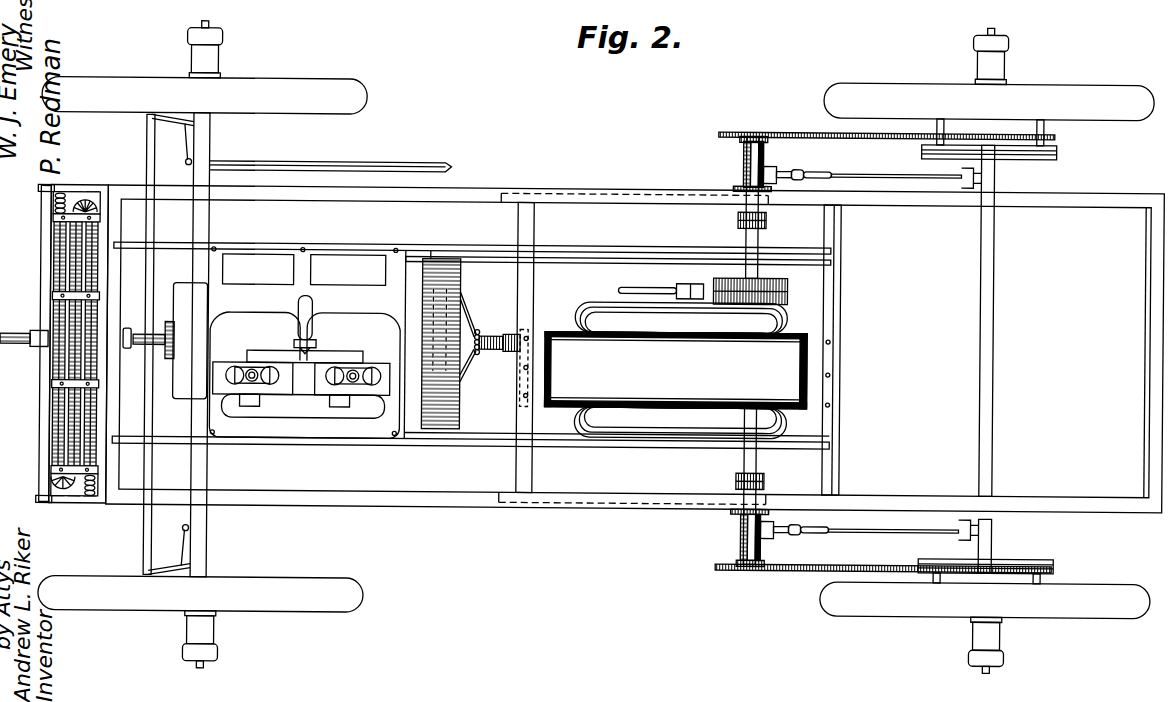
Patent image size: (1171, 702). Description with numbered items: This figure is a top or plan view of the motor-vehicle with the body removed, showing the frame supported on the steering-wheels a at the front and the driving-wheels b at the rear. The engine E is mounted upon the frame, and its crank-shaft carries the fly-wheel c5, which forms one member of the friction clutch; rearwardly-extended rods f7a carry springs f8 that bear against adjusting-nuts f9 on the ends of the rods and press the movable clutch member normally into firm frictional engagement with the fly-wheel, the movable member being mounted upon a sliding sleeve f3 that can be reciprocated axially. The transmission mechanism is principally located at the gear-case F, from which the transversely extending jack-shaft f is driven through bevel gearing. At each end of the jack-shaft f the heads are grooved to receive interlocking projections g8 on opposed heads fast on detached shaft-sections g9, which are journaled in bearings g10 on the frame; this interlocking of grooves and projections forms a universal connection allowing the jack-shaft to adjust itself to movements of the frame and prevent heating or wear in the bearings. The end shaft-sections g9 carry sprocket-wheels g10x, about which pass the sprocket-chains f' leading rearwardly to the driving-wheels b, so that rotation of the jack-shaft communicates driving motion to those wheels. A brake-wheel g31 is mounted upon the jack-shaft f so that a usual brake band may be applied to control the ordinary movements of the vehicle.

The steering-wheels a is at (137, 600).
The driving-wheels b is at (1018, 96).
The engine E is at (322, 410).
The gear-case F is at (675, 361).
The flywheel c5 is at (436, 430).
The jack-shaft f is at (760, 350).
The sprocket-chains f' is at (886, 354).
The sliding sleeve f3 is at (508, 353).
The rearwardly-extended rods f7a is at (492, 336).
The springs f8 is at (490, 355).
The adjusting-nuts f9 is at (508, 335).
The projections g8 is at (737, 480).
The shaft-sections g9 is at (726, 545).
The bearings g10 is at (771, 550).
The sprocket-wheels g10x is at (740, 580).
The brake-wheel g31 is at (787, 285).